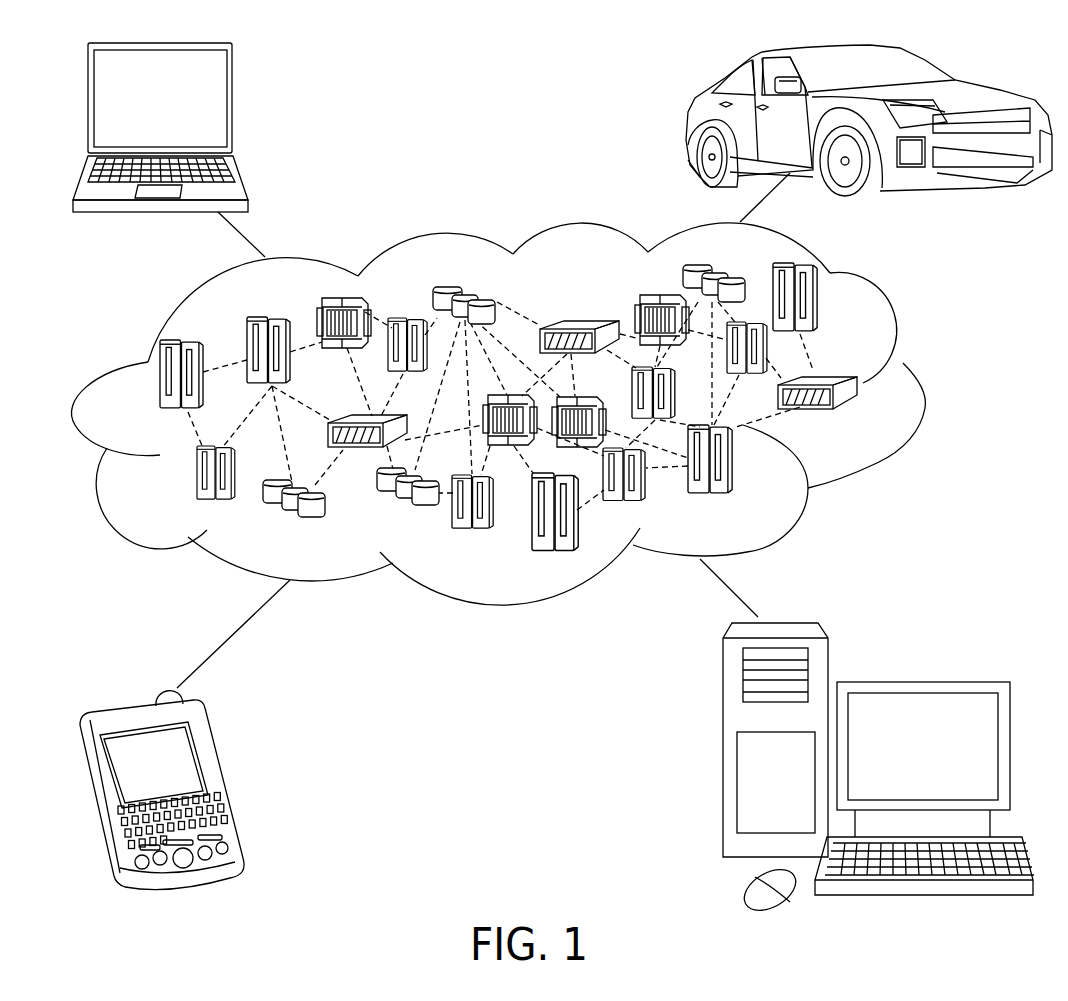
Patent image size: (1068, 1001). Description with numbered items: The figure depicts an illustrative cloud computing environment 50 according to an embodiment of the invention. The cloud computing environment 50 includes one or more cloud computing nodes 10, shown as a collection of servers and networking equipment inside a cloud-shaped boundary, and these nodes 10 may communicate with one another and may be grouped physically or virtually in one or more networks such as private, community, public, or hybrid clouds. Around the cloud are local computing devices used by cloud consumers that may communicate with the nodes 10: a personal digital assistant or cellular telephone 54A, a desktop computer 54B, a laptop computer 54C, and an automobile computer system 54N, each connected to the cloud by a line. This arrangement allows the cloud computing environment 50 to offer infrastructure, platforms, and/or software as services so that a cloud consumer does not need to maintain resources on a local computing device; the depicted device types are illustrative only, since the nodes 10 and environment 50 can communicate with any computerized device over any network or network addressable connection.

The cloud computing node 10 is at (866, 419).
The cloud computing environment 50 is at (920, 383).
The personal digital assistant or cellular telephone 54A is at (220, 777).
The desktop computer 54B is at (918, 682).
The laptop computer 54C is at (232, 108).
The automobile computer system 54N is at (689, 120).